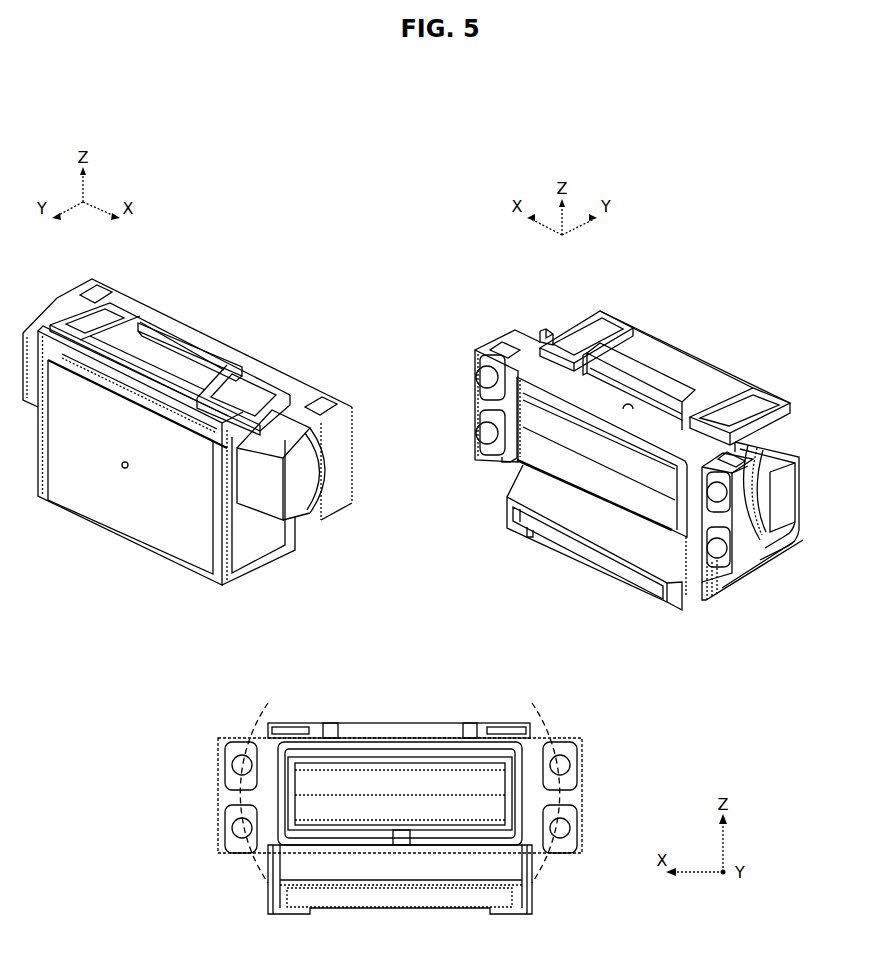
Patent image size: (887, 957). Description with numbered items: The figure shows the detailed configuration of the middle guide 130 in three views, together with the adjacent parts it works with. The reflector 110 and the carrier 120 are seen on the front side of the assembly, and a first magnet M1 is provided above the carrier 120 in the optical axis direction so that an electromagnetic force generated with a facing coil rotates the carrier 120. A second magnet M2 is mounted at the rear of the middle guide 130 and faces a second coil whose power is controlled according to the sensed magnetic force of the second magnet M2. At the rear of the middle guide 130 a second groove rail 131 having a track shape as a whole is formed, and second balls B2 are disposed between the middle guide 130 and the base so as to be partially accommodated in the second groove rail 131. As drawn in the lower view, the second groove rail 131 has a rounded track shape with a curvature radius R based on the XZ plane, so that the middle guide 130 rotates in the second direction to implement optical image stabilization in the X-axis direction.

The reflector 110 is at (128, 512).
The carrier 120 is at (255, 540).
The middle guide 130 is at (267, 373).
The second groove rail 131 is at (227, 752).
The first magnet M1 is at (173, 352).
The second magnet M2 is at (642, 497).
The second ball B2 is at (478, 434).
The curvature radius R is at (265, 717).